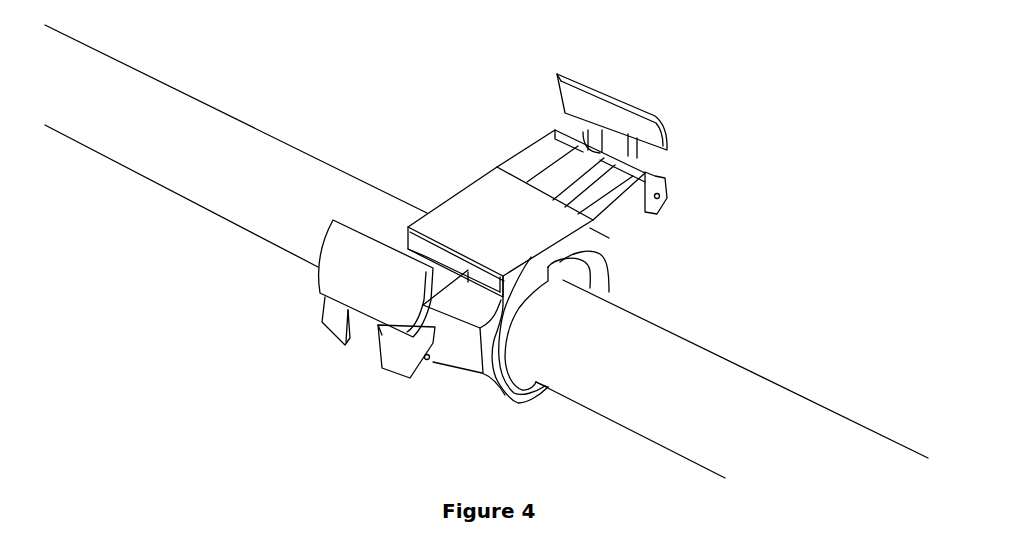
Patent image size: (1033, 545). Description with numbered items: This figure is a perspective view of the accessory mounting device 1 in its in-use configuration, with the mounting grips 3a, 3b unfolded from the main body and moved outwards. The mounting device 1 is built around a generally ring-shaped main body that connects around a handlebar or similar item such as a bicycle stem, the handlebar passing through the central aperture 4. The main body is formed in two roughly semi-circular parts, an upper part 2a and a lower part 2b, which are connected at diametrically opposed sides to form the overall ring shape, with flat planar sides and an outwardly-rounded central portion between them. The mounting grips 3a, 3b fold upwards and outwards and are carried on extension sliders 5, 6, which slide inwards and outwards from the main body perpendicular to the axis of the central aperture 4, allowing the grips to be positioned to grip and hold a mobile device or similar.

The mounting device 1 is at (486, 251).
The upper part 2a is at (615, 258).
The lower part 2b is at (473, 380).
The mounting grip 3a is at (340, 275).
The mounting grip 3b is at (615, 92).
The central aperture 4 is at (518, 372).
The extension slider 5 is at (440, 252).
The extension slider 6 is at (517, 144).